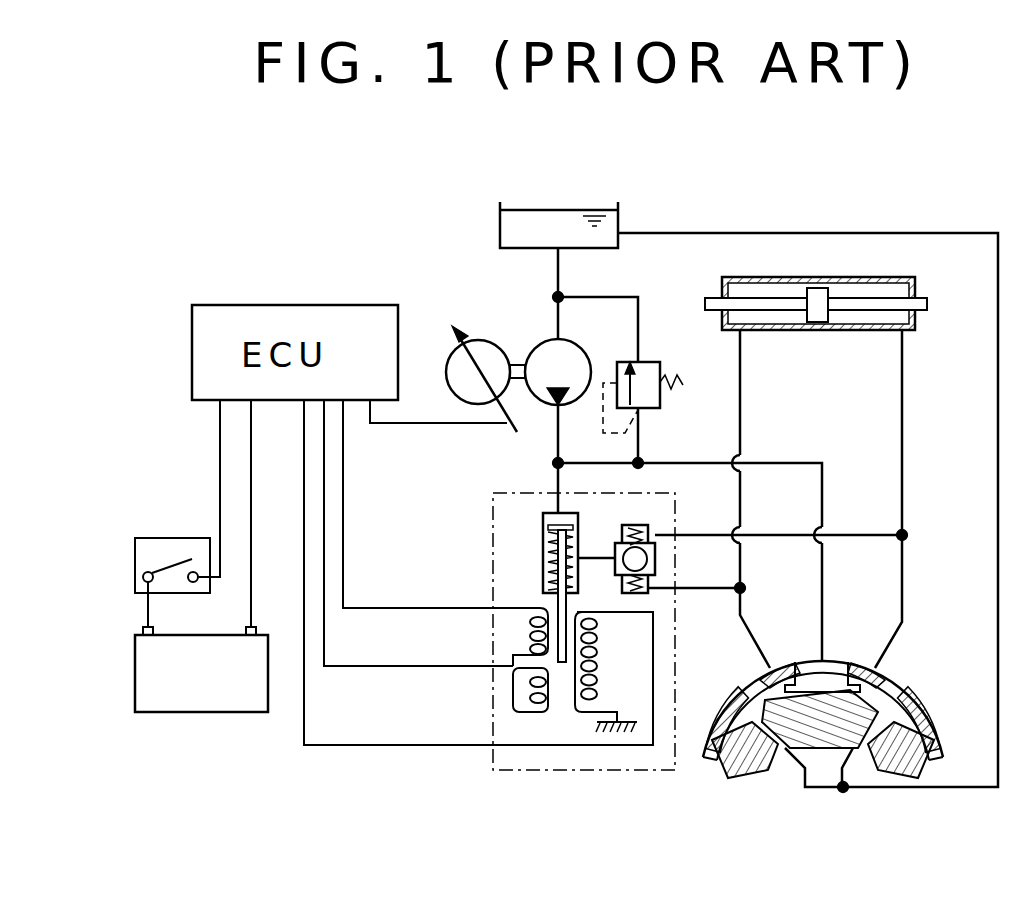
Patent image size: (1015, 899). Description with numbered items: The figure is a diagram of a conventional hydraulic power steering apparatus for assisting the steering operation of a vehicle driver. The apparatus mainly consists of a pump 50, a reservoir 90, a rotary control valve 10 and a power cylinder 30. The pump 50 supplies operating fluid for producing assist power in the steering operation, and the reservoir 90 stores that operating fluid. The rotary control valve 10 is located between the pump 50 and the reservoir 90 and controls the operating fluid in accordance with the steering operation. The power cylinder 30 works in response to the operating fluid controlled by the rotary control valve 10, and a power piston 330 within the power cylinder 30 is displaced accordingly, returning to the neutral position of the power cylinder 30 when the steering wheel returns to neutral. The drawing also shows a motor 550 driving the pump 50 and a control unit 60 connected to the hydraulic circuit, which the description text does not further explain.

The rotary control valve 10 is at (910, 683).
The power cylinder 30 is at (838, 321).
The power piston 330 is at (818, 322).
The pump 50 is at (540, 341).
The electric motor 550 is at (478, 341).
The solenoid control valve unit 60 is at (580, 771).
The reservoir 90 is at (618, 208).